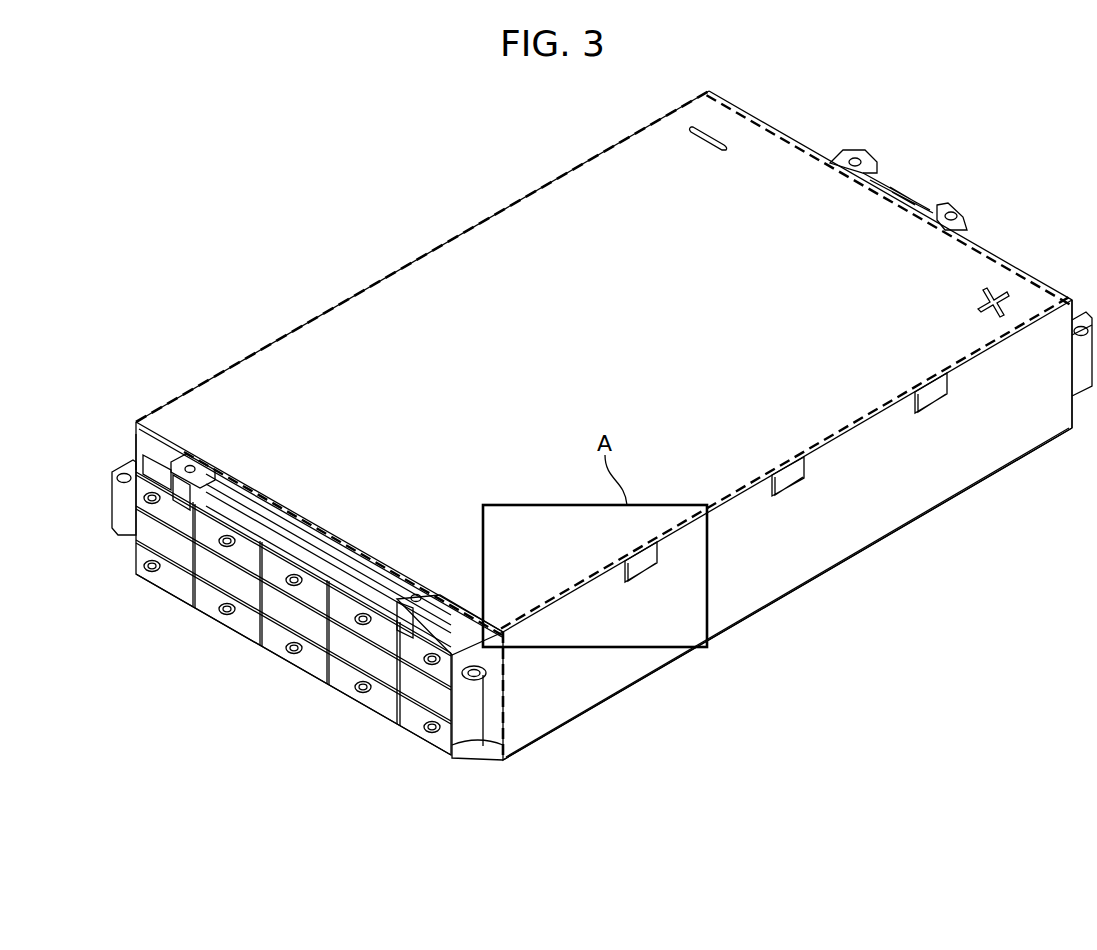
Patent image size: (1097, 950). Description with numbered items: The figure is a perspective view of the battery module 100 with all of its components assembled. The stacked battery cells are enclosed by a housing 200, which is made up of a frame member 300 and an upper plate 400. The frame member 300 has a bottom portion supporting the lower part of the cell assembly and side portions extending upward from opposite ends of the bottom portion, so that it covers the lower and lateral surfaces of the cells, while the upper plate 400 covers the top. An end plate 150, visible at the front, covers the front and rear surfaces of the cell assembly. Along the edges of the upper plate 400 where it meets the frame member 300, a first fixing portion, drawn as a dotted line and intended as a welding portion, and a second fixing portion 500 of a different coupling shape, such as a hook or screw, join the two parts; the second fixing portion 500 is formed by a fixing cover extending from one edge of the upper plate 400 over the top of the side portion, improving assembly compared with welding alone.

The battery module 100 is at (445, 108).
The end plate 150 is at (297, 617).
The housing 200 is at (1070, 552).
The frame member 300 is at (902, 495).
The upper plate 400 is at (913, 313).
The second fixing portion 500 is at (562, 178).